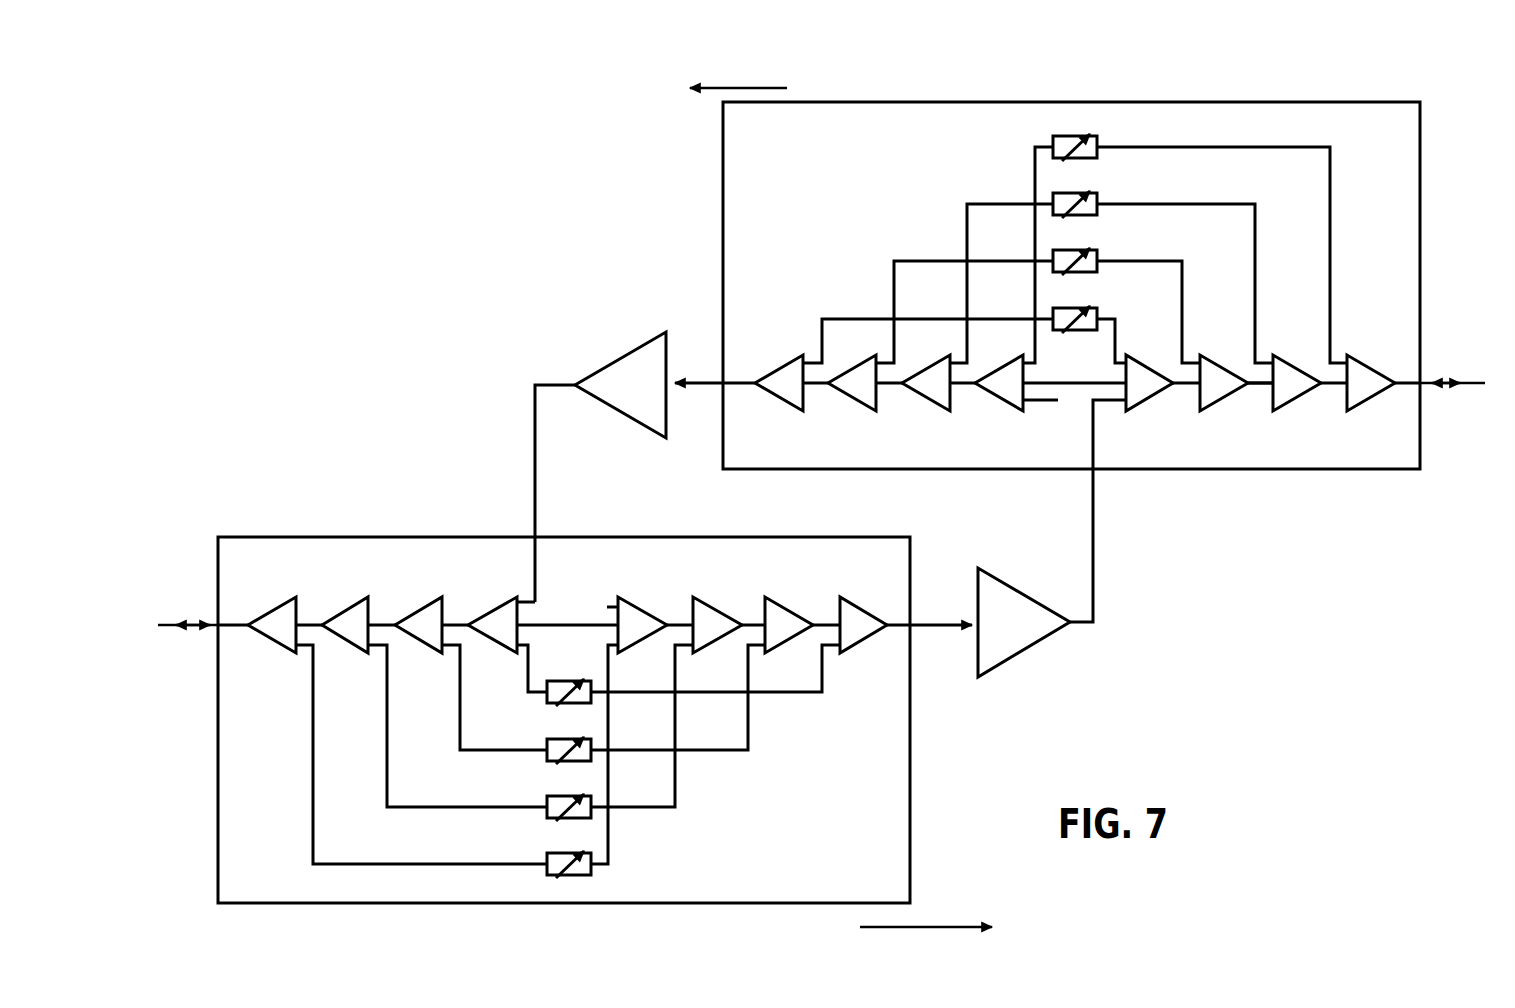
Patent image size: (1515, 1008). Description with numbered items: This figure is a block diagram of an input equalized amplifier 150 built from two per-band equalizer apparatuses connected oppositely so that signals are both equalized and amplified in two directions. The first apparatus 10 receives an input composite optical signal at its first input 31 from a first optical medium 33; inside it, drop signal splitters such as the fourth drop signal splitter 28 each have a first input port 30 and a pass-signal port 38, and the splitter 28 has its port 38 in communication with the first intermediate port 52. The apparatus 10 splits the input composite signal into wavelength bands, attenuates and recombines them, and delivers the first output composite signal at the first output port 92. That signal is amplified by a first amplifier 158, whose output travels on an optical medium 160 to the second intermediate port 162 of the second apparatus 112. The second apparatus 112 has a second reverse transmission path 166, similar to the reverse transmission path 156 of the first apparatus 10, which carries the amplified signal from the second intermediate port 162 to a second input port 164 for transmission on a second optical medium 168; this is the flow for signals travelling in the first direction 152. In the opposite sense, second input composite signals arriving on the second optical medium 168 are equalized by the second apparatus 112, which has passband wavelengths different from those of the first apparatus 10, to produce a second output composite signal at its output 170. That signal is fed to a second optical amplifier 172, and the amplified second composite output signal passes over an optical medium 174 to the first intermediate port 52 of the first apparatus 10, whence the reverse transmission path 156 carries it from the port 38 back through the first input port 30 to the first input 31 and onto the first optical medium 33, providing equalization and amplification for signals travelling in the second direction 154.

The apparatus 10 is at (890, 521).
The fourth drop signal splitter 28 is at (489, 617).
The first input port 30 is at (466, 621).
The first input 31 is at (218, 625).
The first optical medium 33 is at (165, 625).
The port 38 is at (511, 606).
The first intermediate port 52 is at (538, 536).
The first output port 92 is at (910, 623).
The second apparatus 112 is at (1353, 113).
The input equalized amplifier 150 is at (474, 233).
The first direction 152 is at (926, 916).
The second direction 154 is at (738, 78).
The reverse transmission path 156 is at (397, 623).
The first amplifier 158 is at (1012, 656).
The optical medium 160 is at (1093, 622).
The second intermediate port 162 is at (1093, 470).
The second input port 164 is at (1424, 380).
The second reverse transmission path 166 is at (1251, 383).
The second optical medium 168 is at (1456, 386).
The output 170 is at (720, 383).
The second optical amplifier 172 is at (620, 357).
The optical medium 174 is at (533, 426).